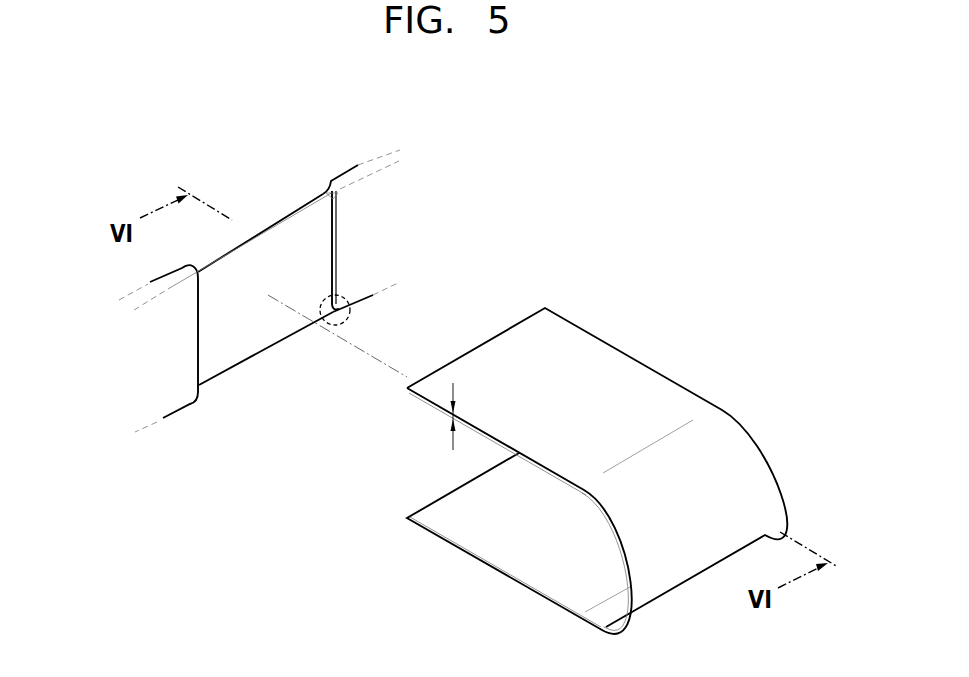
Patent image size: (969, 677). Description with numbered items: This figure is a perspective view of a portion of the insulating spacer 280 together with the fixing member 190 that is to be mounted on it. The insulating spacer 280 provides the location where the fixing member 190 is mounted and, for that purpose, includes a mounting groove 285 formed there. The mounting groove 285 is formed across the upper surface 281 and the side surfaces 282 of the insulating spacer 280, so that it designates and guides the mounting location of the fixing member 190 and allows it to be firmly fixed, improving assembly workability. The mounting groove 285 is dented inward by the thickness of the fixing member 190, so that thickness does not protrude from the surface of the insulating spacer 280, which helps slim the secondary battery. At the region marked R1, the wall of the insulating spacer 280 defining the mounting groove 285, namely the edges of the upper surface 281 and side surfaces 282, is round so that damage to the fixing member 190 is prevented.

The insulating spacer 280 is at (321, 261).
The mounting groove 285 is at (278, 207).
The side surfaces 282 is at (340, 184).
The upper surface 281 is at (375, 196).
The round wall edge R1 is at (350, 315).
The fixing member 190 is at (608, 367).